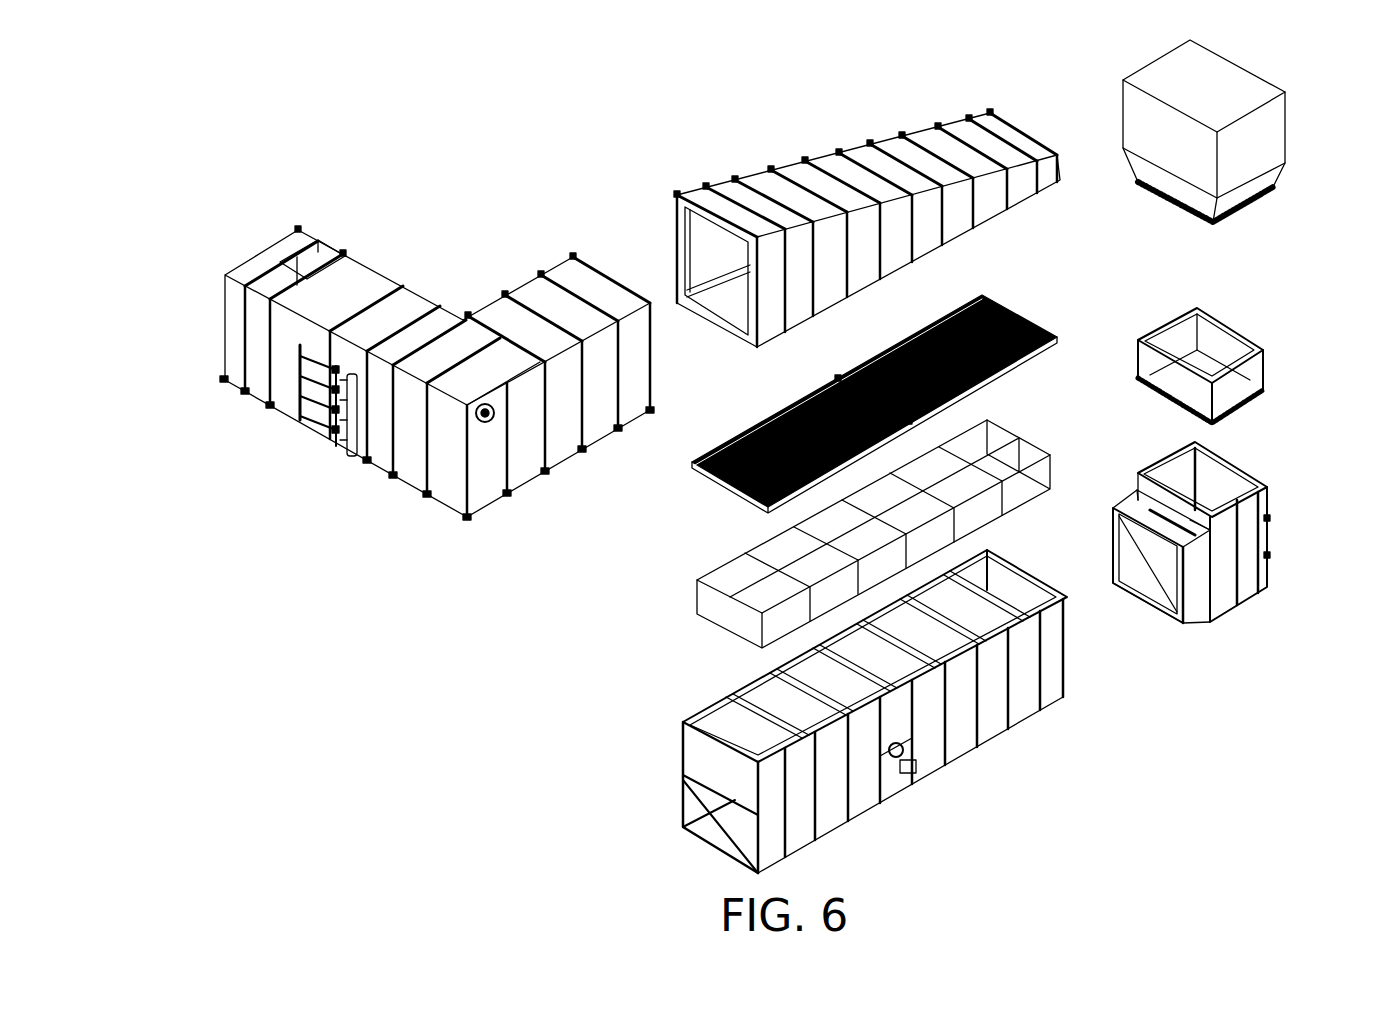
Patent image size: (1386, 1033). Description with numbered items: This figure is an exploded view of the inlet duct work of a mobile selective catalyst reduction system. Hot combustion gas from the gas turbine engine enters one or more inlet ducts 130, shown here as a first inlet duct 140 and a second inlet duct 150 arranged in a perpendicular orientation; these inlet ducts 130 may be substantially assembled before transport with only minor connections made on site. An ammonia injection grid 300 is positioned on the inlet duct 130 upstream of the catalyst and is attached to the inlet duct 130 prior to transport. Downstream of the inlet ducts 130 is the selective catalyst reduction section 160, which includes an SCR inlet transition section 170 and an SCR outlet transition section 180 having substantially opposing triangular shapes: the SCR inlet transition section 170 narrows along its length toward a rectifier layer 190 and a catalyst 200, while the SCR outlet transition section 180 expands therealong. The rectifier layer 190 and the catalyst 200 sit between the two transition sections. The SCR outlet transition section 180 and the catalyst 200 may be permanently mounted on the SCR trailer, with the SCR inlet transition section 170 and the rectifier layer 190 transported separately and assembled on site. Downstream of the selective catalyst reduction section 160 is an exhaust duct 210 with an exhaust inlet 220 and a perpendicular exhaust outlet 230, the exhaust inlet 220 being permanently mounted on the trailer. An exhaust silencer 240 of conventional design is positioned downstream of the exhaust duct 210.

The inlet duct 130 is at (396, 282).
The first inlet duct 140 is at (226, 360).
The second inlet duct 150 is at (564, 452).
The selective catalyst reduction section 160 is at (776, 127).
The SCR inlet transition section 170 is at (882, 140).
The SCR outlet transition section 180 is at (998, 722).
The rectifier layer 190 is at (1015, 313).
The catalyst 200 is at (1002, 496).
The exhaust duct 210 is at (1261, 344).
The exhaust inlet 220 is at (1234, 588).
The exhaust outlet 230 is at (1262, 383).
The exhaust silencer 240 is at (1278, 140).
The ammonia injection grid 300 is at (321, 437).